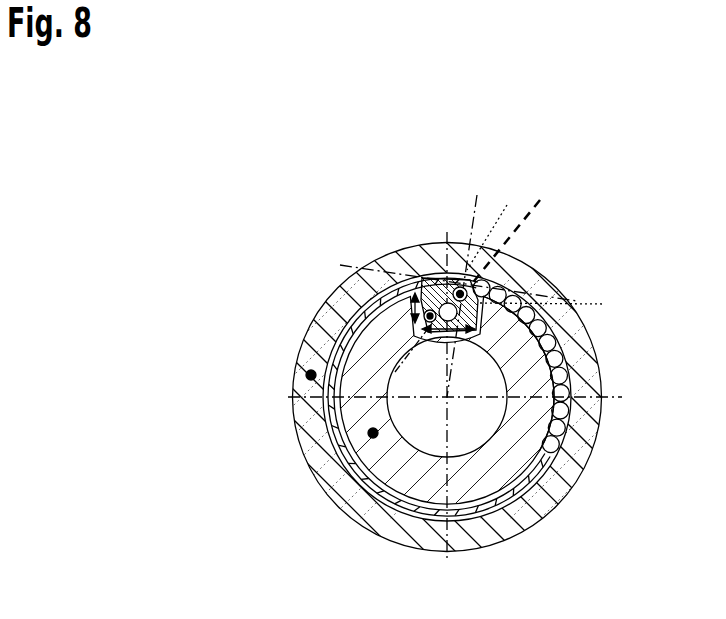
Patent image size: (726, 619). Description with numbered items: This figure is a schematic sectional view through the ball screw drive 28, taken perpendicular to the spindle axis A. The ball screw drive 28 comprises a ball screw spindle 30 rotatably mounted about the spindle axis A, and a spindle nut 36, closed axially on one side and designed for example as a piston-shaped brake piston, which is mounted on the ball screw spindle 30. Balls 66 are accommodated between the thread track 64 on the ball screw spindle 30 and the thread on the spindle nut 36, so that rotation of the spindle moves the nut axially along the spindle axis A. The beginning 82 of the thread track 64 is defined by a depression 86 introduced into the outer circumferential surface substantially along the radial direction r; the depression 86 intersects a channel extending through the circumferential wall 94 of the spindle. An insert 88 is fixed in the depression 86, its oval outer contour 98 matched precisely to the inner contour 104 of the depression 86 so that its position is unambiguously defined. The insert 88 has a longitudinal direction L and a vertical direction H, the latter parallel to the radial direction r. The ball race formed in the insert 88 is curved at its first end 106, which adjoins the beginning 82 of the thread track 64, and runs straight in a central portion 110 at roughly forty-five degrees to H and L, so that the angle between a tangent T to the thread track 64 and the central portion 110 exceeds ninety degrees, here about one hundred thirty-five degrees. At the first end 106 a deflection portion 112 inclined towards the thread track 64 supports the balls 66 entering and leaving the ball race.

The ball screw drive 28 is at (199, 224).
The ball screw spindle 30 is at (368, 434).
The spindle nut 36 is at (306, 374).
The thread track 64 is at (567, 433).
The balls 66 is at (563, 405).
The beginning of the thread track 82 is at (493, 275).
The depression 86 is at (556, 336).
The insert 88 is at (412, 301).
The circumferential wall 94 is at (570, 465).
The outer contour 98 is at (573, 358).
The inner contour 104 is at (560, 385).
The first end of the ball race 106 is at (498, 262).
The central portion 110 is at (420, 300).
The deflection portion 112 is at (455, 285).
The spindle axis A is at (447, 396).
The vertical direction H is at (355, 262).
The longitudinal direction L is at (417, 348).
The tangent T is at (585, 300).
The radial direction r is at (467, 285).